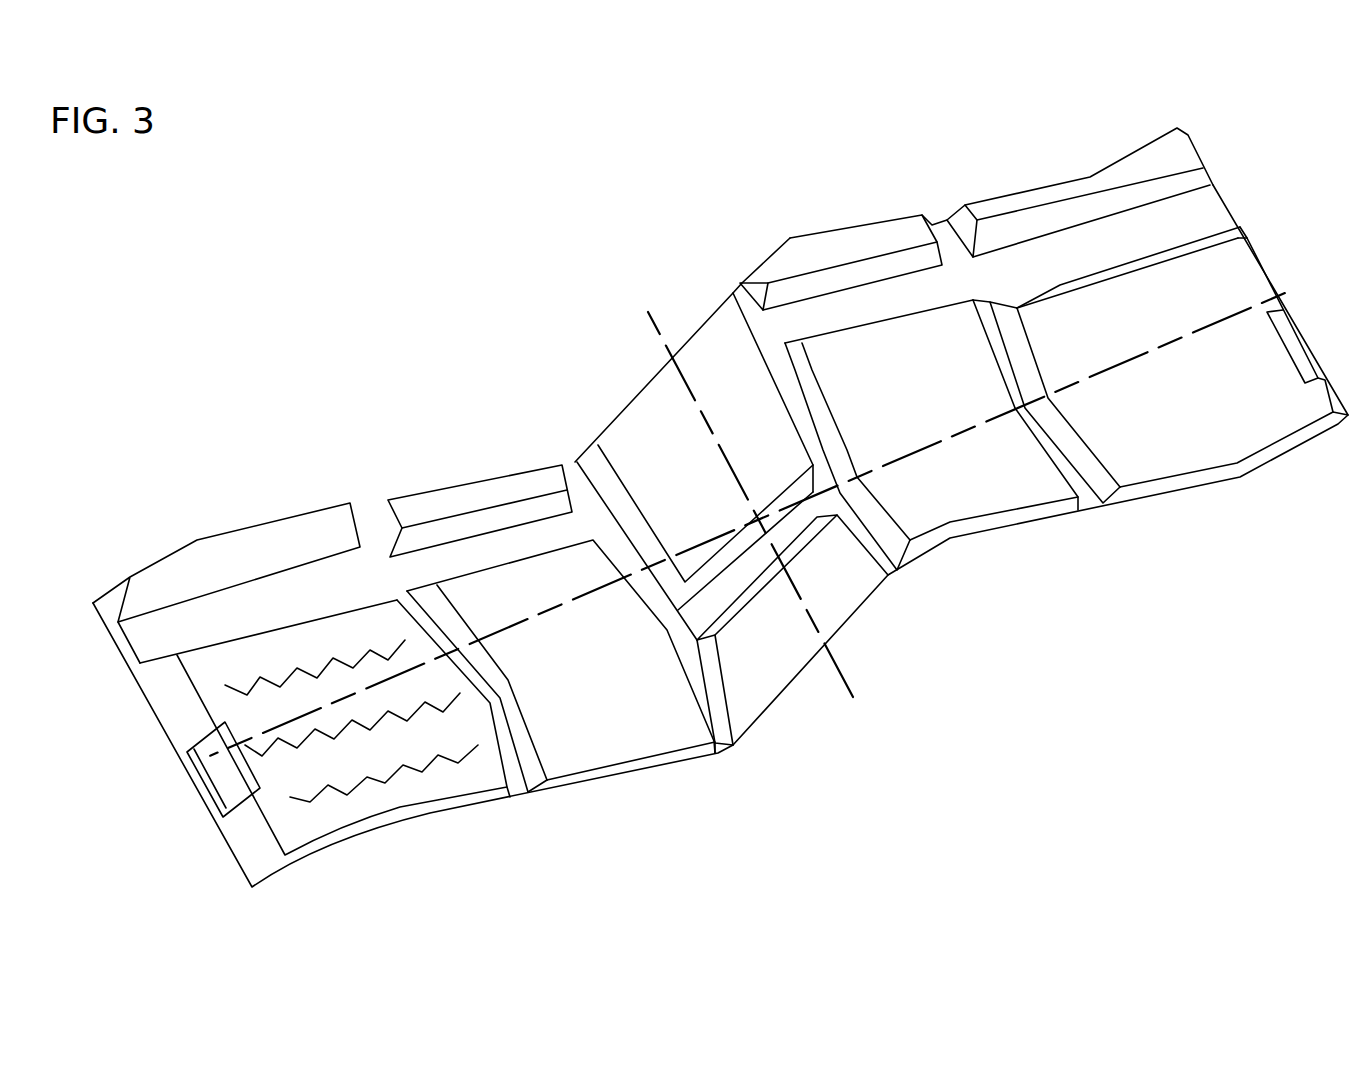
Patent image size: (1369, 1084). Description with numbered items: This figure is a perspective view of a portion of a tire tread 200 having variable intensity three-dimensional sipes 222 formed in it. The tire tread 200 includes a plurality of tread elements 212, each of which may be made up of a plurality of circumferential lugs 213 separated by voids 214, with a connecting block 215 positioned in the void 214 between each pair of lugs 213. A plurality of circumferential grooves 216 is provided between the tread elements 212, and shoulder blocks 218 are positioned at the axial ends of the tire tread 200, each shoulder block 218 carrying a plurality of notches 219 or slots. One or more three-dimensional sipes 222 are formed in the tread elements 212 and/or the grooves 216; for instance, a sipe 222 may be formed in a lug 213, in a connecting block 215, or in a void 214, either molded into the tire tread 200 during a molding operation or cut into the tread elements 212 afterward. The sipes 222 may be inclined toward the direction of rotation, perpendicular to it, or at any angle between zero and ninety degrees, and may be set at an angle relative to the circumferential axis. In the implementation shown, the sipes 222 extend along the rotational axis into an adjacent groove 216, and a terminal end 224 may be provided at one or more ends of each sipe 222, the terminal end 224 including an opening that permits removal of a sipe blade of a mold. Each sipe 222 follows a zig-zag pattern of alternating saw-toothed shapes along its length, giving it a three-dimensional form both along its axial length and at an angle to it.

The tire tread 200 is at (995, 152).
The tread element 212 is at (304, 500).
The circumferential lug 213 is at (512, 572).
The void 214 is at (432, 558).
The connecting block 215 is at (227, 582).
The circumferential groove 216 is at (574, 478).
The shoulder block 218 is at (224, 724).
The notch 219 is at (215, 756).
The three-dimensional sipe 222 is at (383, 783).
The terminal end 224 is at (473, 762).